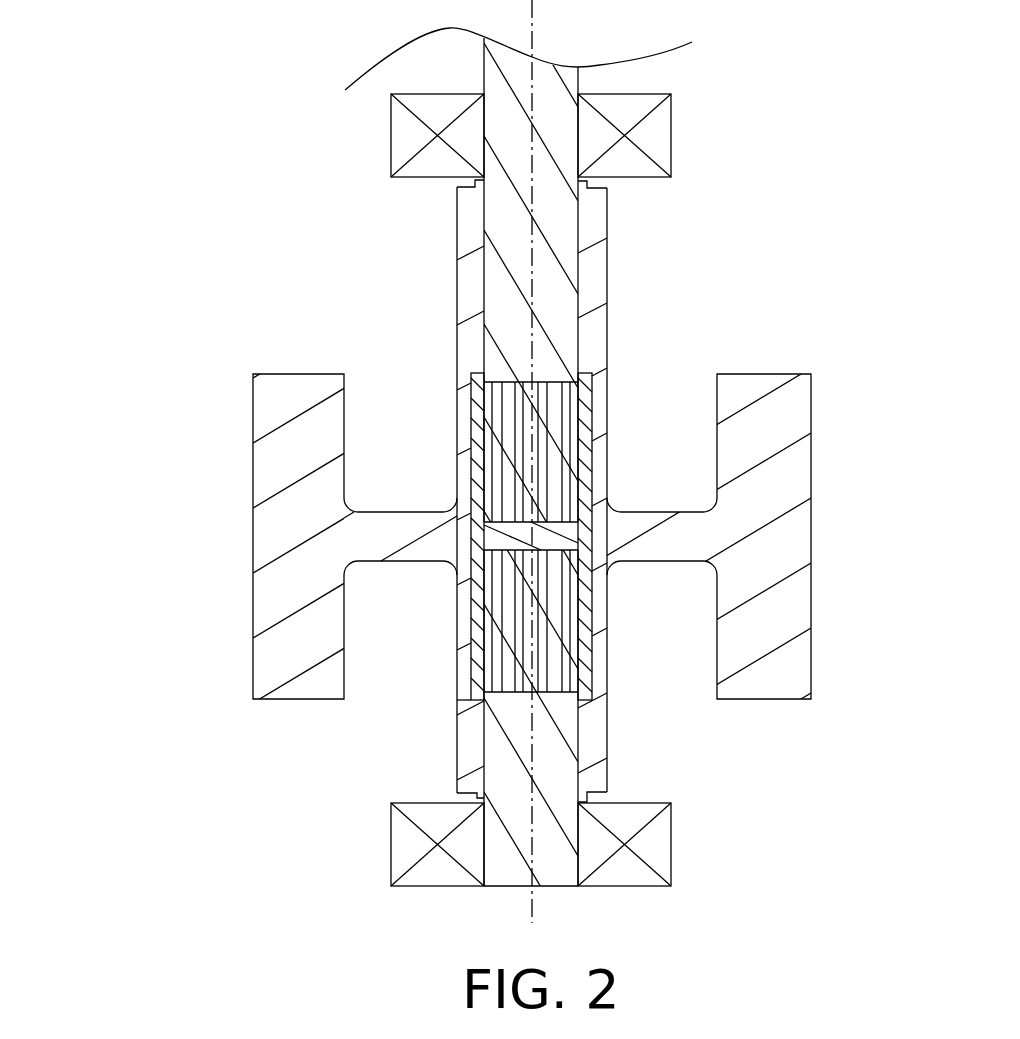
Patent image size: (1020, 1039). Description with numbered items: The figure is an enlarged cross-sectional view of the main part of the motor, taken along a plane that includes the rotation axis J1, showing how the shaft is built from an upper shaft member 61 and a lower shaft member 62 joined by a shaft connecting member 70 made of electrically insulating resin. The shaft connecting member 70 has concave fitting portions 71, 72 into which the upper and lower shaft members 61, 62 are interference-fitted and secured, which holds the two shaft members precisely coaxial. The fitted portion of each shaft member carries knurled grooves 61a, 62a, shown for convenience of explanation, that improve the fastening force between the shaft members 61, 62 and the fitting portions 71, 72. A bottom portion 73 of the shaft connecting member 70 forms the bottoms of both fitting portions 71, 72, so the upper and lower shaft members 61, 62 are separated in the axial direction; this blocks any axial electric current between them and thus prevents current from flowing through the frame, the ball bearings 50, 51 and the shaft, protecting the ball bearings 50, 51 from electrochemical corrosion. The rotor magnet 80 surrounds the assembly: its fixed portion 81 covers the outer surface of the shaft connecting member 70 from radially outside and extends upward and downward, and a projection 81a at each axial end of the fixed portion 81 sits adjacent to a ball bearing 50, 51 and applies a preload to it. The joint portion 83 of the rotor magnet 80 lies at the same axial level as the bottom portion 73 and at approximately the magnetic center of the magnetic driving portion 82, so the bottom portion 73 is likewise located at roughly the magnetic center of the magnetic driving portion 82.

The rotation axis J1 is at (532, 43).
The upper shaft member 61 is at (547, 102).
The grooves 61a is at (470, 440).
The lower shaft member 62 is at (510, 867).
The grooves 62a is at (485, 672).
The ball bearing 50 is at (660, 128).
The ball bearing 51 is at (657, 847).
The shaft connecting member 70 is at (598, 535).
The fitting portion 71 is at (592, 413).
The fitting portion 72 is at (592, 698).
The bottom portion 73 is at (550, 538).
The rotor magnet 80 is at (248, 556).
The fixed portion 81 is at (473, 285).
The projection 81a is at (475, 183).
The magnetic driving portion 82 is at (270, 397).
The joint portion 83 is at (393, 530).